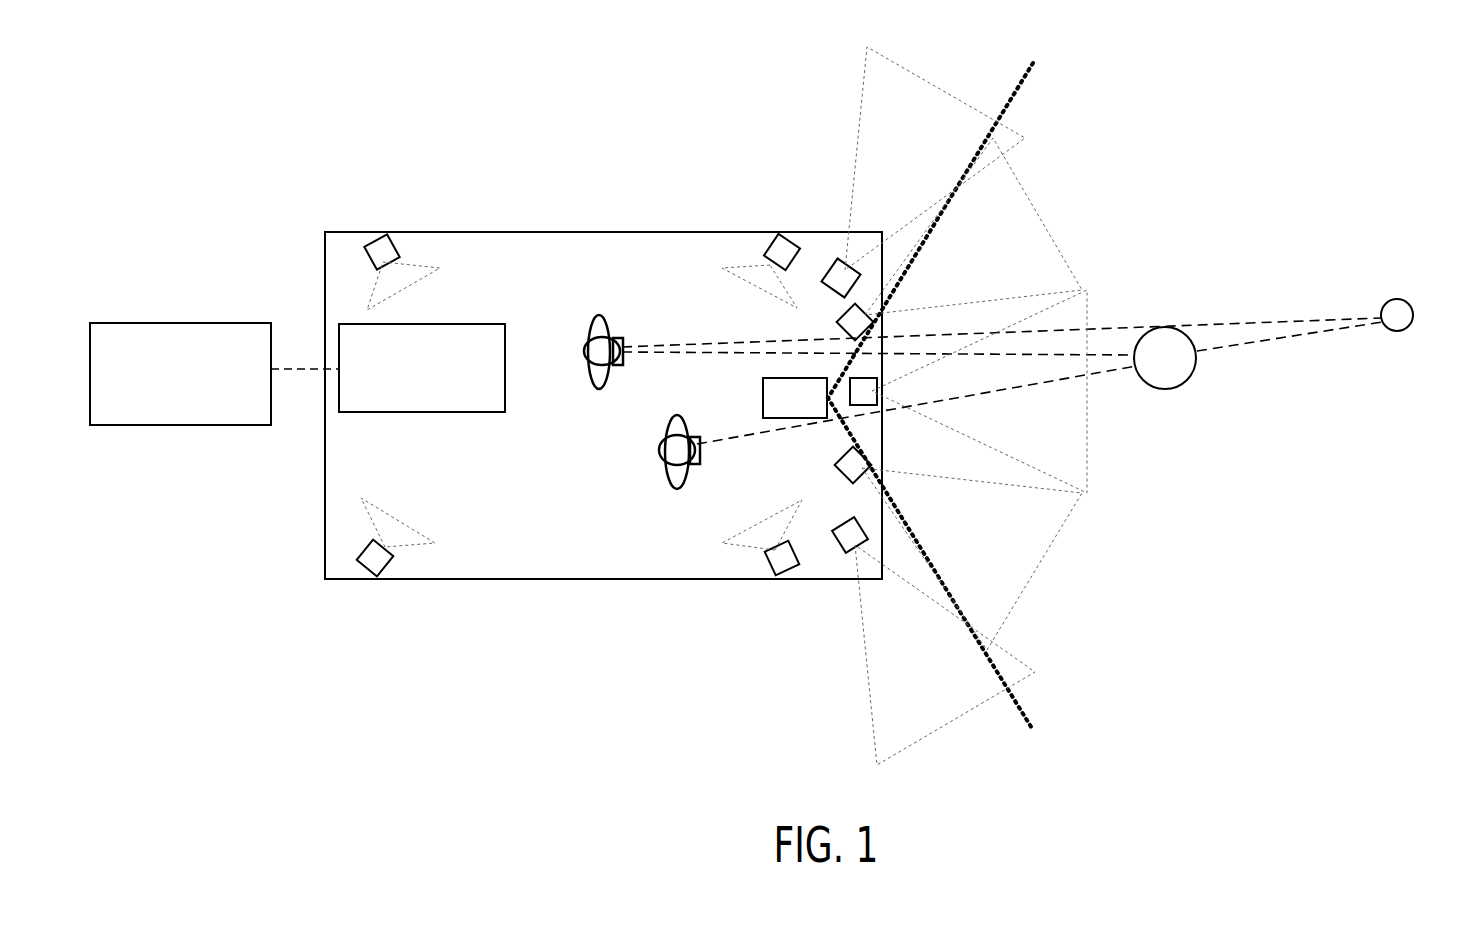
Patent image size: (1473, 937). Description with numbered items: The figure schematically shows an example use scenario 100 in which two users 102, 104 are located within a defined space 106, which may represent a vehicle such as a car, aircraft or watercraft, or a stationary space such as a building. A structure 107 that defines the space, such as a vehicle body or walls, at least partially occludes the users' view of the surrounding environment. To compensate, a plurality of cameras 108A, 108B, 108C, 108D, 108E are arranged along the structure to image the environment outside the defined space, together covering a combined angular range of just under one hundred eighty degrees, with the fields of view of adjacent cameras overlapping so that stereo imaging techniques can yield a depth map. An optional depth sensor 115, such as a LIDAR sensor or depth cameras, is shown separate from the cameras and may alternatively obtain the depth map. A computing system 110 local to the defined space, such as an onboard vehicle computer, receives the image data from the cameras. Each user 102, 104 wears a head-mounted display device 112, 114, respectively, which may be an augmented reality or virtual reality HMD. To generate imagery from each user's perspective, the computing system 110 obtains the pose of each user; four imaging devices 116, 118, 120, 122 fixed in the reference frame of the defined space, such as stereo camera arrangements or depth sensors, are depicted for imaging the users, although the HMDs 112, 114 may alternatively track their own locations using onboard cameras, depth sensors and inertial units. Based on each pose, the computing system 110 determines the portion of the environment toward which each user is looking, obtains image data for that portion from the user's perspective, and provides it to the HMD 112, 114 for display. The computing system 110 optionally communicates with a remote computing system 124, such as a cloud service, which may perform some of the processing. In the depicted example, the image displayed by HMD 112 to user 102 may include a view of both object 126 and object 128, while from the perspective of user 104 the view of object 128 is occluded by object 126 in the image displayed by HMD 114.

The use scenario 100 is at (1222, 73).
The user 102 is at (600, 387).
The user 104 is at (677, 487).
The defined space 106 is at (343, 255).
The structure 107 is at (487, 232).
The camera 108A is at (833, 263).
The camera 108B is at (835, 322).
The camera 108C is at (860, 373).
The camera 108D is at (837, 460).
The camera 108E is at (843, 530).
The computing system 110 is at (482, 391).
The head-mounted display device 112 is at (618, 337).
The head-mounted display device 114 is at (697, 442).
The depth sensor 115 is at (779, 409).
The imaging device 116 is at (396, 243).
The imaging device 118 is at (767, 247).
The imaging device 120 is at (390, 568).
The imaging device 122 is at (767, 560).
The remote computing system 124 is at (240, 408).
The object 126 is at (1197, 365).
The object 128 is at (1413, 322).